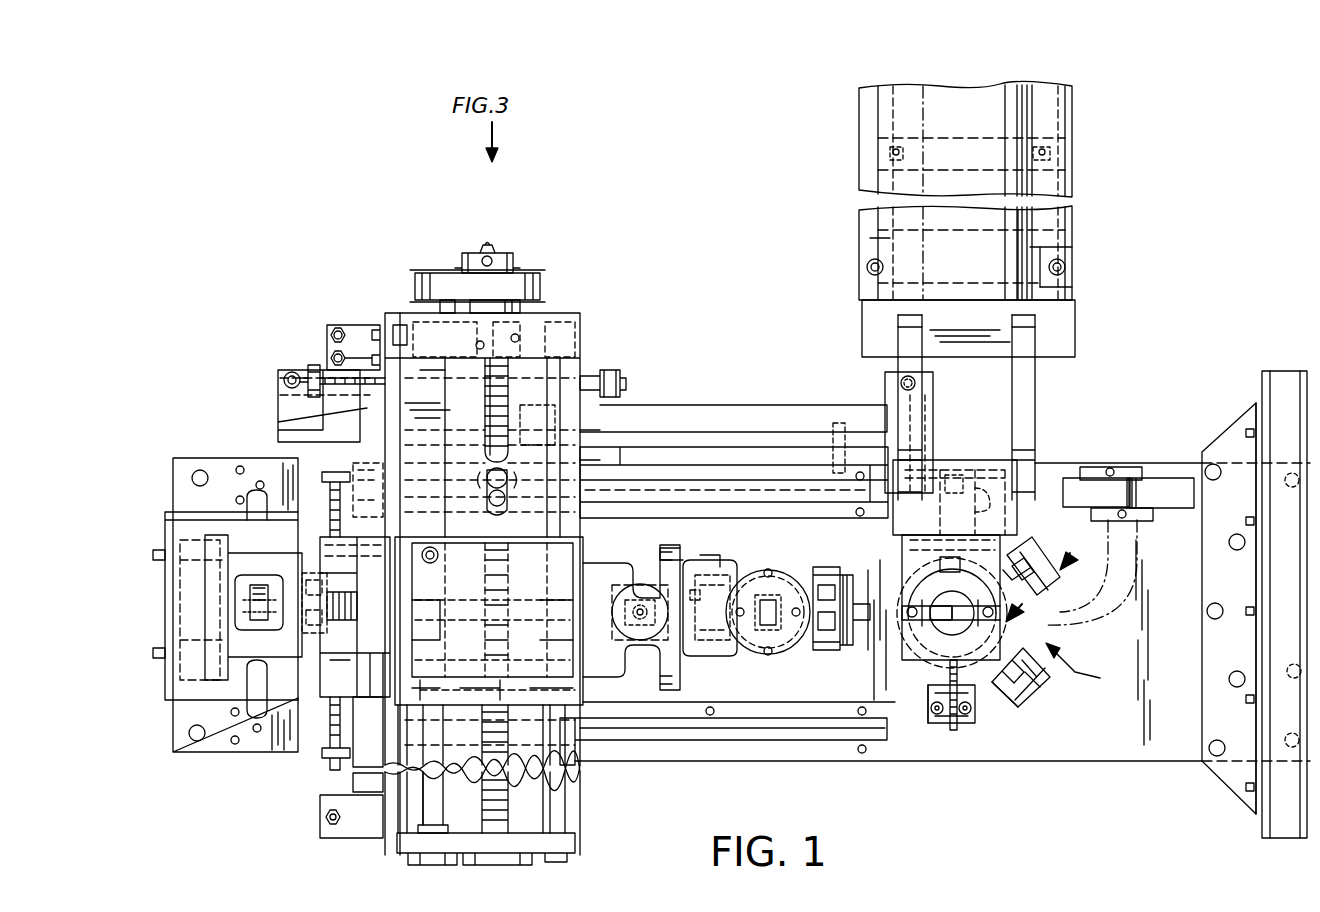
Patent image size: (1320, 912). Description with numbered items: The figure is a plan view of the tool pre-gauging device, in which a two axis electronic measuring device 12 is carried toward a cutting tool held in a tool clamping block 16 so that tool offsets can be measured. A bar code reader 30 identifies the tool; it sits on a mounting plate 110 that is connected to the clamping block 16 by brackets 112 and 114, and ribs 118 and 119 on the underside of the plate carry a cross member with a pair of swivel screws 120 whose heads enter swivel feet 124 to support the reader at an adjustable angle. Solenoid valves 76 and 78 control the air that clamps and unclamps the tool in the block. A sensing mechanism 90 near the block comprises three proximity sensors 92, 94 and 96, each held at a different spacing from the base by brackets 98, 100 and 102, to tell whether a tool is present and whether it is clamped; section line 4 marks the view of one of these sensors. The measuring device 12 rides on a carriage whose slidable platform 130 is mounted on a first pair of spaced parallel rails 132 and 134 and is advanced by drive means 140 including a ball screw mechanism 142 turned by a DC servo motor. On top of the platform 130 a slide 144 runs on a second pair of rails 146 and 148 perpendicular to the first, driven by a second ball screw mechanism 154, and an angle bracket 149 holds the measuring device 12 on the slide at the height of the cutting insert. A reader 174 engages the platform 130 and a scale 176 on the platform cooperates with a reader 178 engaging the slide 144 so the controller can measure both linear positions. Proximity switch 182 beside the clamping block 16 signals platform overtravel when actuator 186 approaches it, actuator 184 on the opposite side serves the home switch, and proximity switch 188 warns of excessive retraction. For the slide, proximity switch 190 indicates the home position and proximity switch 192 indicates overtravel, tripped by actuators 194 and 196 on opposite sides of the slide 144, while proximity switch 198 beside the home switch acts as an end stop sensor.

The section line 4- 4 is at (1050, 598).
The two axis electronic measuring device 12 is at (762, 562).
The tool clamping block 16 is at (905, 648).
The bar code reader 30 is at (1030, 232).
The solenoid valve 76 is at (1085, 478).
The solenoid valve 78 is at (1140, 478).
The sensing mechanism 90 is at (942, 604).
The sensor 92 is at (1040, 580).
The sensor 94 is at (1030, 690).
The sensor 96 is at (955, 720).
The bracket 98 is at (1030, 550).
The bracket 100 is at (1020, 700).
The bracket 102 is at (935, 720).
The mounting plate 110 is at (1060, 335).
The bracket 112 is at (1030, 384).
The bracket 114 is at (898, 328).
The rib 118 is at (1072, 240).
The rib 119 is at (872, 240).
The swivel screw 120 is at (890, 160).
The swivel foot 124 is at (885, 155).
The slidable platform 130 is at (580, 815).
The rail 132 is at (680, 487).
The rail 134 is at (805, 740).
The drive means 140 is at (305, 705).
The ball screw mechanism 142 is at (350, 622).
The slide 144 is at (570, 560).
The rail 146 is at (432, 800).
The rail 148 is at (585, 420).
The angle bracket 149 is at (615, 645).
The ball screw mechanism 154 is at (510, 370).
The reader 174 is at (780, 415).
The scale 176 is at (280, 421).
The reader 178 is at (370, 590).
The proximity switch 182 is at (930, 384).
The sensing actuator 184 is at (314, 365).
The sensing actuator 186 is at (608, 372).
The proximity switch 188 is at (283, 380).
The proximity switch 190 is at (345, 352).
The proximity switch 192 is at (320, 817).
The actuator 194 is at (325, 470).
The actuator 196 is at (328, 752).
The proximity switch 198 is at (328, 330).